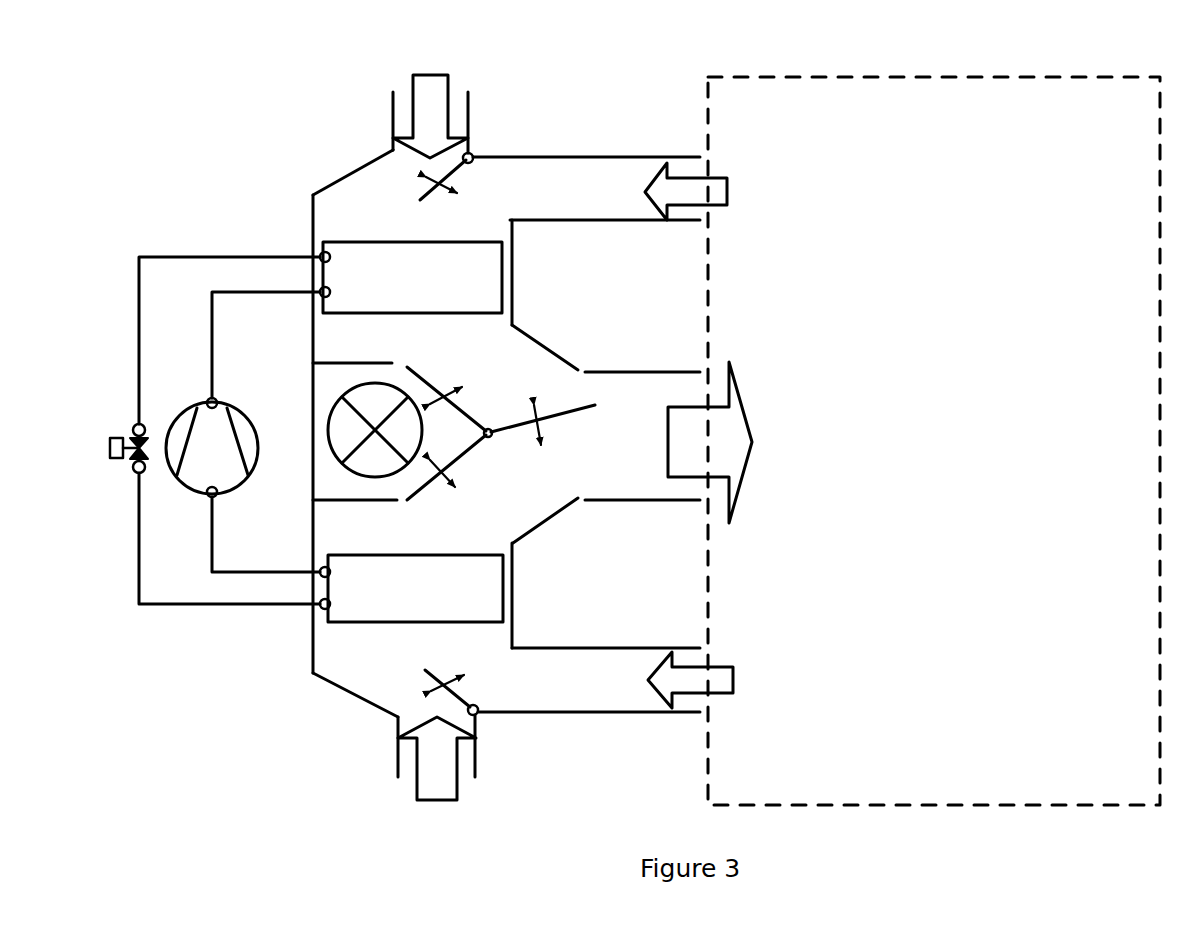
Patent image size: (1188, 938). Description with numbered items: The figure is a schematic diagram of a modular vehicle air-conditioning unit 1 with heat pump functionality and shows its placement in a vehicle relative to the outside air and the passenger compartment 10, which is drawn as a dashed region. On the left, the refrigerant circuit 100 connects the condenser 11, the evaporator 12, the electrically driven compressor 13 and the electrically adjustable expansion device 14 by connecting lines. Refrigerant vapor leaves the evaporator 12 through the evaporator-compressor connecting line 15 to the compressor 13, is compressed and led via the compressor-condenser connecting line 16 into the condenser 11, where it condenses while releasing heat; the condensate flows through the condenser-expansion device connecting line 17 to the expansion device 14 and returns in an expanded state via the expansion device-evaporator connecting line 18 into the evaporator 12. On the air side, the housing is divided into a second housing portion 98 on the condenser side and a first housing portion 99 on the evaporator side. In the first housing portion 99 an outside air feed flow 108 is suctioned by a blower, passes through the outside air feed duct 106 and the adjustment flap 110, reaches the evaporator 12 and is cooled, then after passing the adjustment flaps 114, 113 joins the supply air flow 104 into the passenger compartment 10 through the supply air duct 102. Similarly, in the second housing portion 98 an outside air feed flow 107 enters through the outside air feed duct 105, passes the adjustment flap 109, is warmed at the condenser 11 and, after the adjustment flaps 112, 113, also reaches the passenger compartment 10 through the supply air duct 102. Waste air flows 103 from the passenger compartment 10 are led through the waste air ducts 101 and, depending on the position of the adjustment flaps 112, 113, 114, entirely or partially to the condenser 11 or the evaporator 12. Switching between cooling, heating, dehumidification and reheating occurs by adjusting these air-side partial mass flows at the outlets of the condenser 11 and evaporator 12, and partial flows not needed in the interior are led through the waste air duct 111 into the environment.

The modular vehicle air-conditioning unit 1 is at (208, 132).
The passenger compartment 10 is at (972, 73).
The condenser 11 is at (447, 242).
The evaporator 12 is at (470, 627).
The electrically driven compressor 13 is at (237, 417).
The electrically adjustable expansion device 14 is at (135, 425).
The evaporator-compressor connecting line 15 is at (210, 548).
The compressor-condenser connecting line 16 is at (216, 330).
The condenser-expansion device connecting line 17 is at (217, 254).
The expansion device-evaporator connecting line 18 is at (172, 610).
The second housing portion 98 is at (310, 215).
The first housing portion 99 is at (310, 680).
The refrigerant circuit 100 is at (306, 540).
The waste air ducts 101 is at (570, 157).
The supply air duct 102 is at (600, 367).
The waste air flows 103 is at (727, 181).
The supply air flow 104 is at (745, 415).
The outside air feed duct 105 is at (392, 120).
The outside air feed duct 106 is at (398, 757).
The outside air feed flow 107 is at (432, 70).
The outside air feed flow 108 is at (442, 783).
The adjustment flap 109 is at (424, 193).
The adjustment flap 110 is at (422, 675).
The waste air duct 111 is at (365, 463).
The adjustment flap 112 is at (417, 372).
The adjustment flap 113 is at (582, 403).
The adjustment flap 114 is at (415, 502).